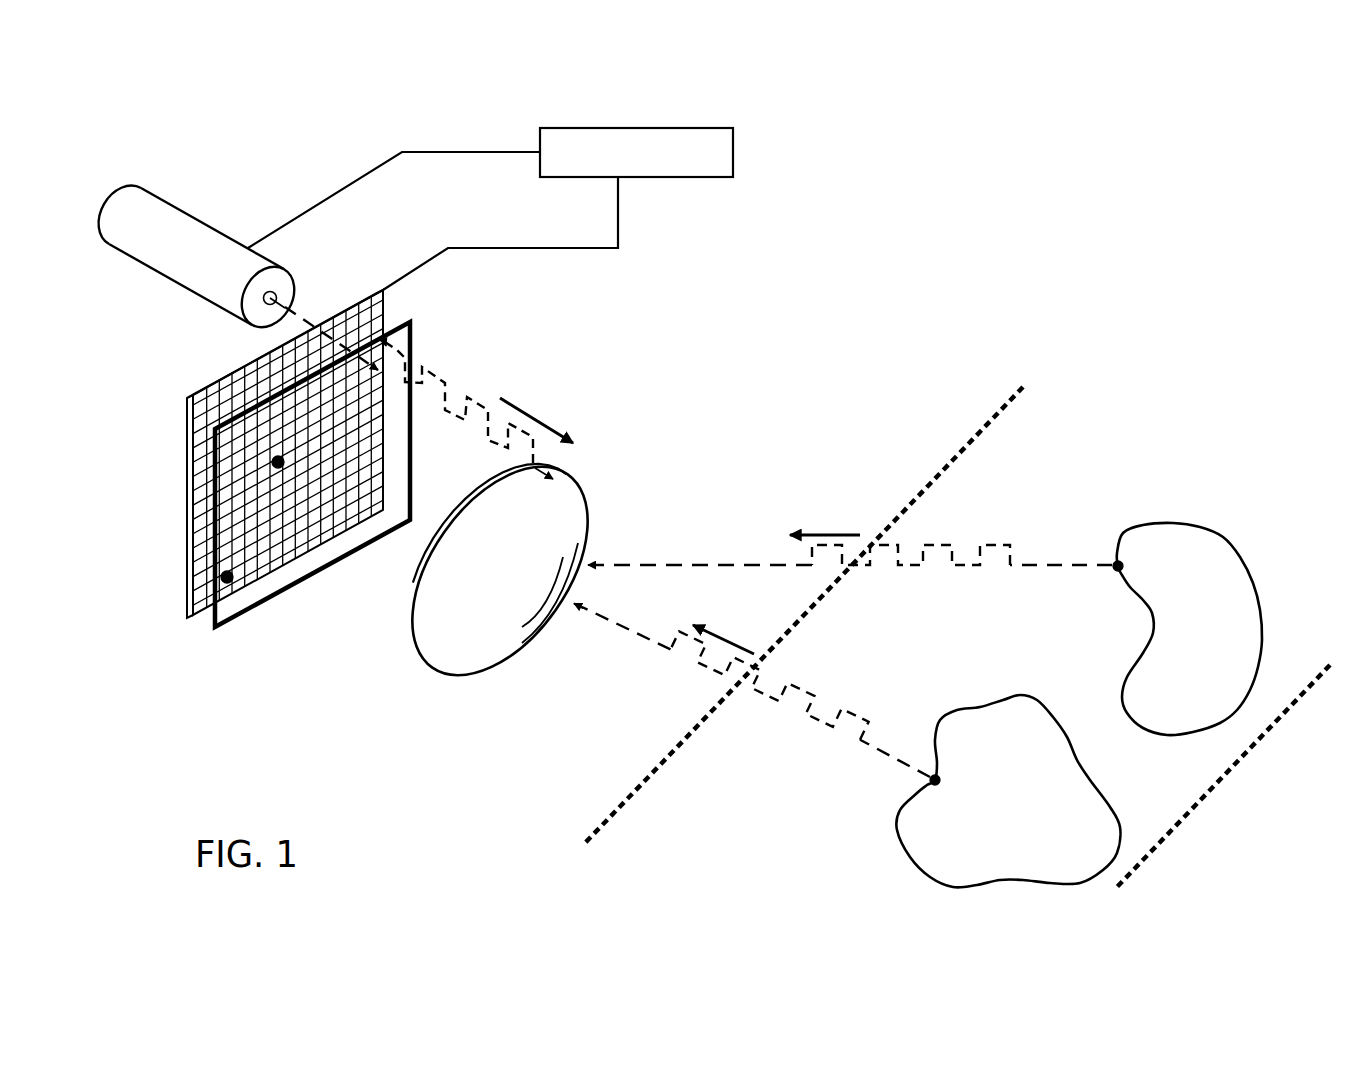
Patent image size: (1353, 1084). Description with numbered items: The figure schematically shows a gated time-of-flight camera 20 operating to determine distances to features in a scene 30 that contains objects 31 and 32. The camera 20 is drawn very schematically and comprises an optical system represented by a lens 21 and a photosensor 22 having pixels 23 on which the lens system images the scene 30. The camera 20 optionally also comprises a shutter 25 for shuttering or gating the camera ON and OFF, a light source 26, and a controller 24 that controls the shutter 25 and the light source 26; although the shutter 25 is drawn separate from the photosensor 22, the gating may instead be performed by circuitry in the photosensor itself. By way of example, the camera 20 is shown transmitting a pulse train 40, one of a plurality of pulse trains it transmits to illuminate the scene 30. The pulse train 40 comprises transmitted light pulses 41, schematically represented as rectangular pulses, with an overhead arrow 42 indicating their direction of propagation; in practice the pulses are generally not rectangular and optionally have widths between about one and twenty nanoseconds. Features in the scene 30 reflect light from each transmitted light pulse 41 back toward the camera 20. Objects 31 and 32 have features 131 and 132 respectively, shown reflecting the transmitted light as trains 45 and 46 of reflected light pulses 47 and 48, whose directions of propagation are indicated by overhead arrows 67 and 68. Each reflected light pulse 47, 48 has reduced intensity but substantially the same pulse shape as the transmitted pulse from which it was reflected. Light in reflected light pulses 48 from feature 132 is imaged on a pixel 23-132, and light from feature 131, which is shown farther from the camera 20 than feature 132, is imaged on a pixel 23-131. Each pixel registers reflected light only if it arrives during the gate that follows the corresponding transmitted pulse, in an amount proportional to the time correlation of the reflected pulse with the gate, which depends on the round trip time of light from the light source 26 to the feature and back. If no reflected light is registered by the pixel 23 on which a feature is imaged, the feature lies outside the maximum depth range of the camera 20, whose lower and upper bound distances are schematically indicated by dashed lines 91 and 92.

The GT-TOF camera 20 is at (187, 130).
The lens 21 is at (503, 663).
The photosensor 22 is at (222, 454).
The pixels 23 is at (196, 402).
The pixel 23-131 is at (231, 582).
The pixel 23-132 is at (281, 466).
The controller 24 is at (635, 128).
The shutter 25 is at (215, 628).
The light source 26 is at (202, 217).
The scene 30 is at (1228, 410).
The object 31 is at (1188, 610).
The object 32 is at (979, 791).
The pulse train 40 is at (637, 345).
The transmitted light pulses 41 is at (468, 390).
The overhead arrow 42 is at (555, 423).
The train of reflected light pulses 45 is at (850, 598).
The train of reflected light pulses 46 is at (752, 701).
The reflected light pulses 47 is at (887, 547).
The reflected light pulses 48 is at (847, 717).
The overhead arrow 67 is at (820, 532).
The overhead arrow 68 is at (748, 655).
The dashed line 91 is at (625, 797).
The dashed line 92 is at (1207, 793).
The feature 131 is at (1118, 566).
The feature 132 is at (935, 780).